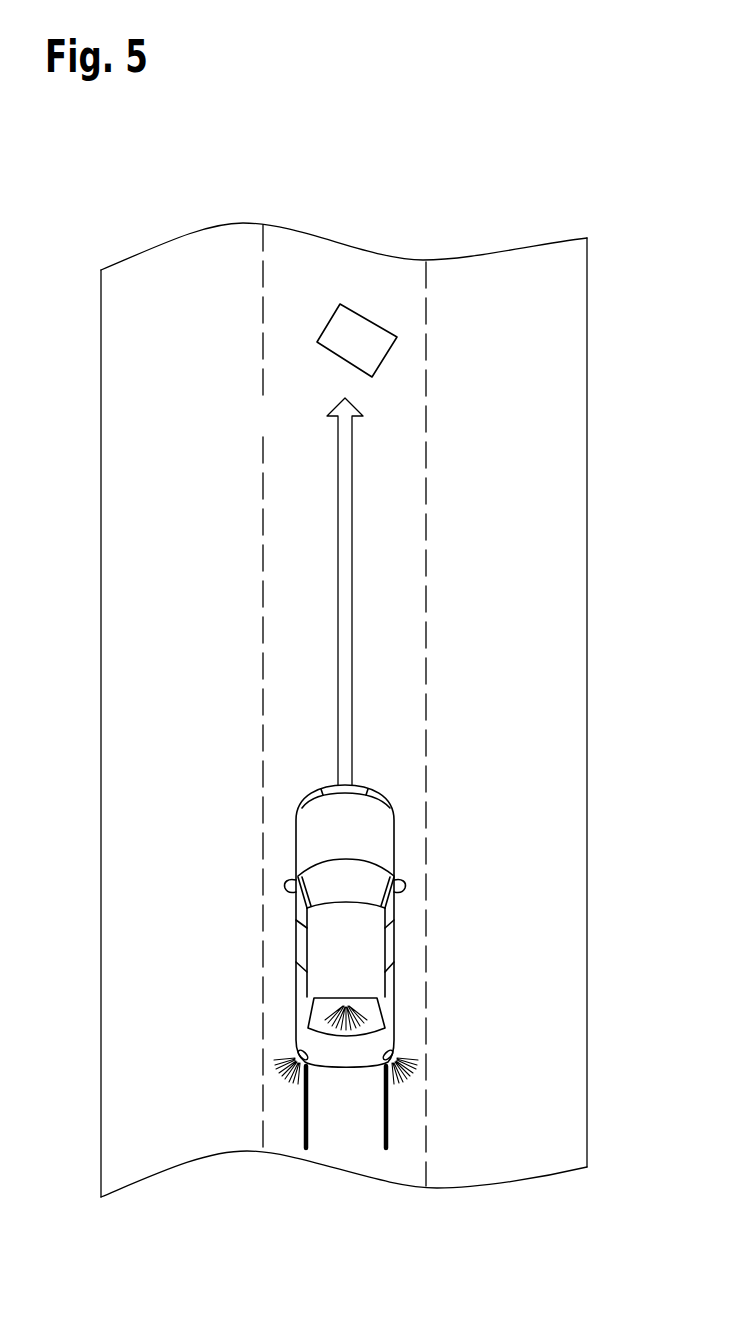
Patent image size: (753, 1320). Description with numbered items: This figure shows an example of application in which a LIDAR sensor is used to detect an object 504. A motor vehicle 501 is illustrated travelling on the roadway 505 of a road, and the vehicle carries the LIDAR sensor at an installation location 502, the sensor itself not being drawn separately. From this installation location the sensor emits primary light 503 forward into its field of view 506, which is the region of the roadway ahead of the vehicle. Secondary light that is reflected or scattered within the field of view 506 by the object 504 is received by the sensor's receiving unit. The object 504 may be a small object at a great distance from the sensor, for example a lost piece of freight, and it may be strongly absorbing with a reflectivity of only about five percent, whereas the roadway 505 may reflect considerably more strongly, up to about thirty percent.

The motor vehicle 501 is at (360, 942).
The installation location 502 is at (350, 818).
The primary light 503 is at (342, 635).
The object 504 is at (367, 350).
The roadway 505 is at (557, 420).
The field of view 506 is at (274, 439).